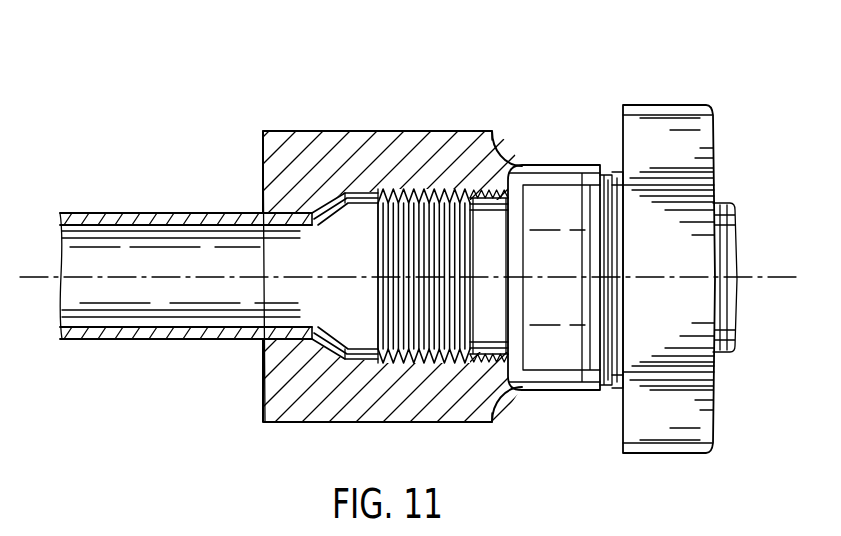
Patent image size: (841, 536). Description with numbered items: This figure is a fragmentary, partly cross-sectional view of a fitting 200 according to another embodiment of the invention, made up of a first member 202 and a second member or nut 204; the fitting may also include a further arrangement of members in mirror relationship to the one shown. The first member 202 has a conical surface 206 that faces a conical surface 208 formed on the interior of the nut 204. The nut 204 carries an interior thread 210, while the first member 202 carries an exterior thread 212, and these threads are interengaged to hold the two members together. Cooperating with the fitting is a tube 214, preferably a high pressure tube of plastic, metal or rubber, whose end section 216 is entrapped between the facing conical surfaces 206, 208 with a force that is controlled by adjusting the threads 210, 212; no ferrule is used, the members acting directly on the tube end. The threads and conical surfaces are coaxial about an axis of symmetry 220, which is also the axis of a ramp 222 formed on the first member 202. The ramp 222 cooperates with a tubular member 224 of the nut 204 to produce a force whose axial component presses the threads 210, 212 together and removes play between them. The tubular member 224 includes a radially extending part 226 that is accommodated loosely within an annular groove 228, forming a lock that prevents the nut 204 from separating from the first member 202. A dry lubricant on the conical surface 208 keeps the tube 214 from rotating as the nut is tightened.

The fitting 200 is at (377, 128).
The first member 202 is at (553, 342).
The second member or nut 204 is at (462, 148).
The conical surface 206 is at (263, 200).
The conical surface 208 is at (323, 195).
The interior thread 210 is at (416, 187).
The exterior thread 212 is at (483, 180).
The tube 214 is at (169, 212).
The end section 216 is at (322, 342).
The axis of symmetry 220 is at (143, 278).
The ramp 222 is at (566, 165).
The tubular member 224 is at (542, 163).
The radially extending part 226 is at (608, 178).
The annular groove 228 is at (627, 185).